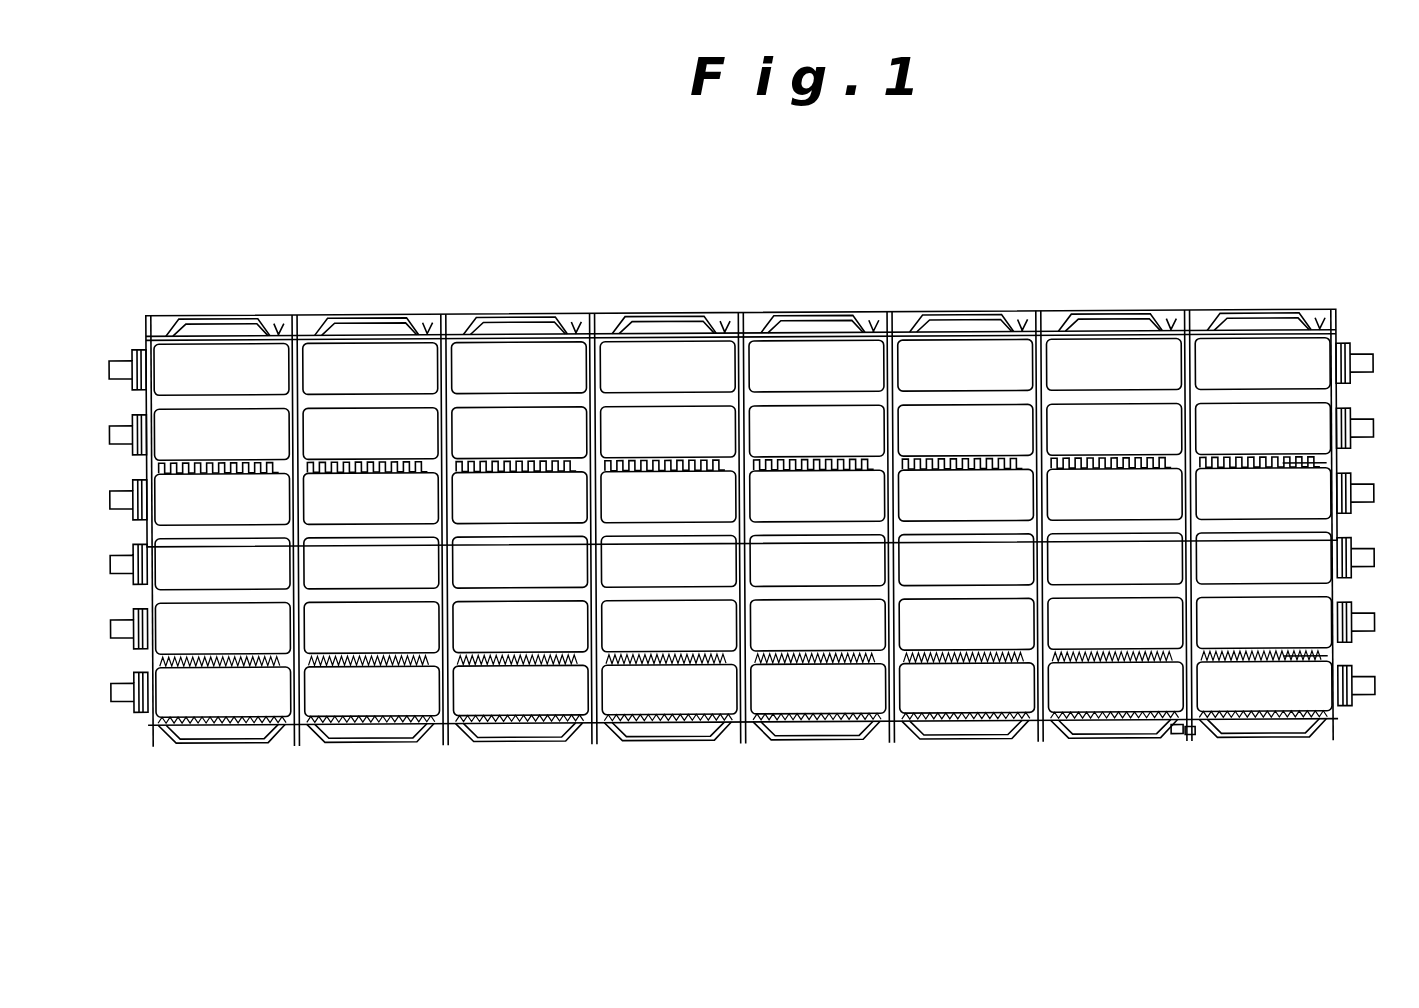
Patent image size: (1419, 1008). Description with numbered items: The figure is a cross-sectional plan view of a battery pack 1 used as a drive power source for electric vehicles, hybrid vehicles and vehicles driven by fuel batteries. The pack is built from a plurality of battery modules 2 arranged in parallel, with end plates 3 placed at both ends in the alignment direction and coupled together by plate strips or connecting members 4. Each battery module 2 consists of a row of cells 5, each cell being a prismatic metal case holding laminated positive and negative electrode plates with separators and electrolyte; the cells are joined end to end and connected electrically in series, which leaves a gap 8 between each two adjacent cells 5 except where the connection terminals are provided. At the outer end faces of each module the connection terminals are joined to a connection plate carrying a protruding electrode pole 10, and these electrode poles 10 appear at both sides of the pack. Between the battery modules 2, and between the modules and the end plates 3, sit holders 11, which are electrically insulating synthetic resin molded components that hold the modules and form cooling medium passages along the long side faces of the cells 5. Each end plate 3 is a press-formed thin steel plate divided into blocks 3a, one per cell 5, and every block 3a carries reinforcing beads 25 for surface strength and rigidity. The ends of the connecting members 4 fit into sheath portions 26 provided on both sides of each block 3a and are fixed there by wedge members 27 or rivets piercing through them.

The battery pack 1 is at (513, 282).
The battery module 2 is at (946, 482).
The end plate 3 is at (1063, 298).
The block 3a is at (1095, 316).
The connecting member 4 is at (742, 362).
The cell 5 is at (487, 350).
The gap 8 is at (752, 375).
The electrode pole 10 is at (113, 428).
The holder 11 is at (1340, 465).
The reinforcing bead 25 is at (664, 746).
The sheath portion 26 is at (1177, 740).
The wedge member 27 is at (1195, 742).